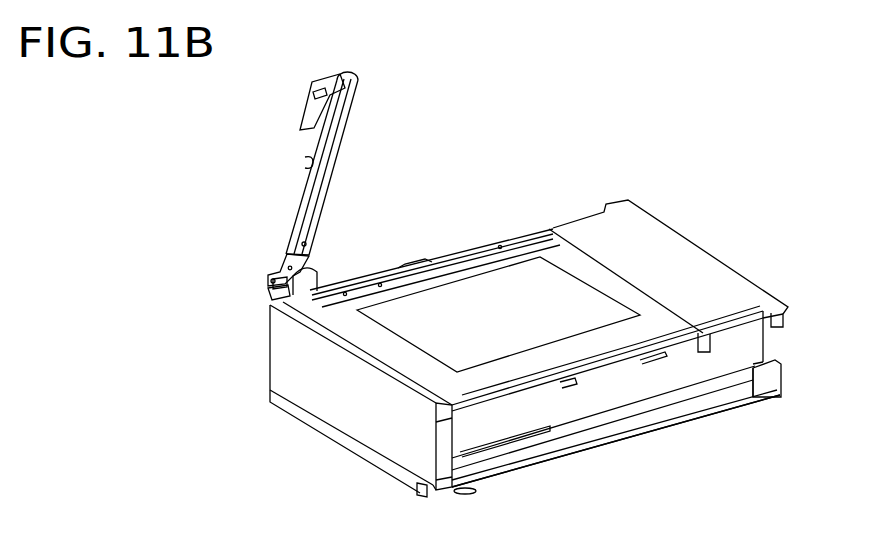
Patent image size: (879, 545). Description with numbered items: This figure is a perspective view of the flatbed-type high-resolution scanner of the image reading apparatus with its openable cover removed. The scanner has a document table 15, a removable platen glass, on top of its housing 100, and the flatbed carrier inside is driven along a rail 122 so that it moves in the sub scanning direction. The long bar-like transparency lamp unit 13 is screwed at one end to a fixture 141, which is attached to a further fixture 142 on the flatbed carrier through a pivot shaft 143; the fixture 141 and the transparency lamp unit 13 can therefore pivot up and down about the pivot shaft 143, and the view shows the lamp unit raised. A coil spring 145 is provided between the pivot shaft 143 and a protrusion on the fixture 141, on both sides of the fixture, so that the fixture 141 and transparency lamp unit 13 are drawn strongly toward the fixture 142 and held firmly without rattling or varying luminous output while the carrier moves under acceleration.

The transparency lamp unit 13 is at (348, 129).
The document table 15 is at (553, 303).
The housing 100 is at (690, 240).
The rail 122 is at (667, 400).
The fixture 141 is at (280, 262).
The fixture 142 is at (327, 286).
The pivot shaft 143 is at (287, 293).
The spring 145 is at (280, 287).